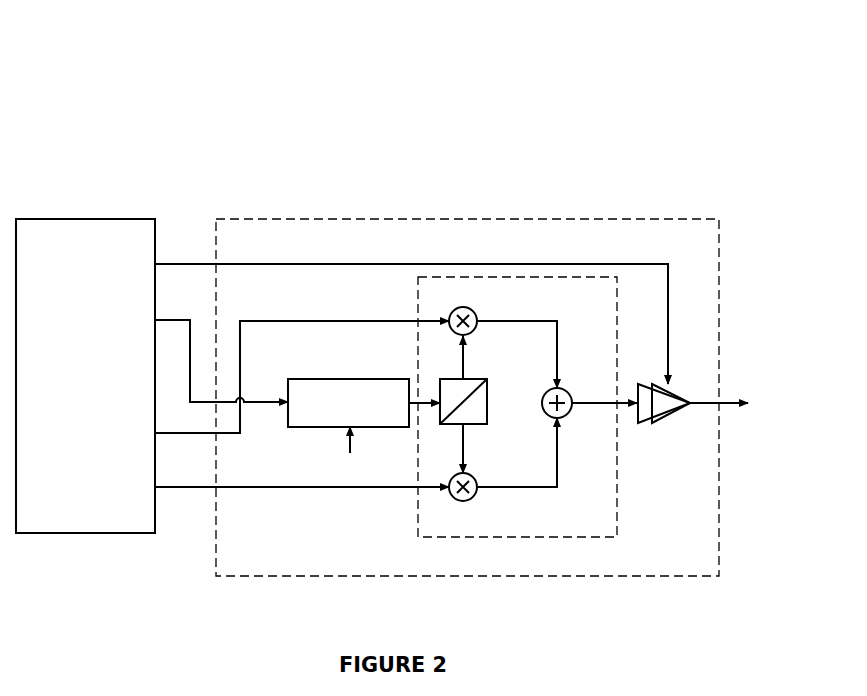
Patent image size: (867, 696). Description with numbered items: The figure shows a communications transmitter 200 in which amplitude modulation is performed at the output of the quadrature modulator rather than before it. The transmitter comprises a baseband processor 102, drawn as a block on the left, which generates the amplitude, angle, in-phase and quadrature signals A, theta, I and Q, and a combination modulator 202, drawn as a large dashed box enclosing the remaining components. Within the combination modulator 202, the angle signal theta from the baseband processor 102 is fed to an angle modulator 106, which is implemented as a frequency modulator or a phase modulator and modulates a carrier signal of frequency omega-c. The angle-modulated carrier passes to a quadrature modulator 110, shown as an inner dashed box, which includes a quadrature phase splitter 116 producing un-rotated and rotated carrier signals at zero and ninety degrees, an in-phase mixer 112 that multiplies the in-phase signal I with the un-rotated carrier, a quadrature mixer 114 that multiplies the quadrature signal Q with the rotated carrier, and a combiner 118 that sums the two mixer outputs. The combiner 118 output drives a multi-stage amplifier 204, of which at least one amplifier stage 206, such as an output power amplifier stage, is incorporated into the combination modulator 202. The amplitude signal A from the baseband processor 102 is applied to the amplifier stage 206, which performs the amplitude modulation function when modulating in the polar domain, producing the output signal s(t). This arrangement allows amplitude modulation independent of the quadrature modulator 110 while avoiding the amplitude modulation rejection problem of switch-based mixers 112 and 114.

The communications transmitter 200 is at (108, 90).
The baseband processor 102 is at (157, 217).
The combination modulator 202 is at (459, 214).
The quadrature modulator 110 is at (620, 318).
The angle modulator 106 is at (352, 374).
The quadrature phase splitter 116 is at (489, 376).
The in-phase mixer 112 is at (473, 311).
The quadrature mixer 114 is at (472, 499).
The combiner 118 is at (570, 392).
The multi-stage amplifier 204 is at (674, 420).
The amplifier stage 206 is at (675, 400).